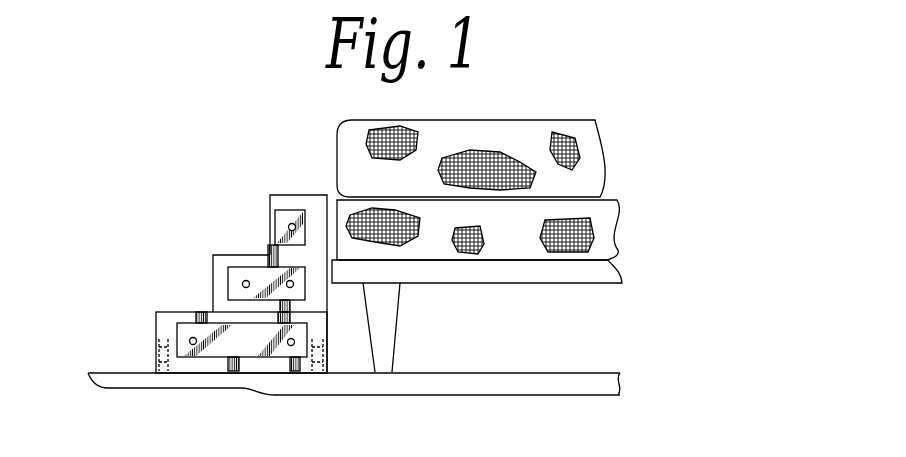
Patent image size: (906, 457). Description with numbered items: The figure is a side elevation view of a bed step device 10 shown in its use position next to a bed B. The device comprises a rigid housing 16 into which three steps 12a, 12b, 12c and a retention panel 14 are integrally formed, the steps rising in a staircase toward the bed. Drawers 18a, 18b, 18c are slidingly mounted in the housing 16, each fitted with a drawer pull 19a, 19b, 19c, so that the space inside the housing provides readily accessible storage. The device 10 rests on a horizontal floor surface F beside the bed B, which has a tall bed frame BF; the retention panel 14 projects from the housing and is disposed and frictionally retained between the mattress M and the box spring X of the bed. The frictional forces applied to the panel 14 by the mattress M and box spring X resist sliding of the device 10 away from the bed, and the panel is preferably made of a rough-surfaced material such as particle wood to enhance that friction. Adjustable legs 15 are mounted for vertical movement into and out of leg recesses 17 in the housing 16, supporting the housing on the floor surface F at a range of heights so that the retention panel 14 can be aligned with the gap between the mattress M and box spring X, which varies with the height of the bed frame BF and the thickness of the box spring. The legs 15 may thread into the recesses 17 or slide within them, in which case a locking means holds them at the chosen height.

The bed step device 10 is at (123, 295).
The step 12a is at (184, 313).
The step 12b is at (231, 255).
The step 12c is at (271, 196).
The retention panel 14 is at (340, 196).
The adjustable legs 15 is at (164, 373).
The rigid housing 16 is at (317, 303).
The leg recesses 17 is at (156, 338).
The drawer 18a is at (254, 356).
The drawer 18b is at (261, 270).
The drawer 18c is at (285, 210).
The drawer pull 19a is at (193, 343).
The drawer pull 19b is at (246, 283).
The drawer pull 19c is at (296, 229).
The bed B is at (480, 99).
The bed frame BF is at (395, 334).
The floor surface F is at (487, 398).
The mattress M is at (452, 147).
The box spring X is at (519, 242).